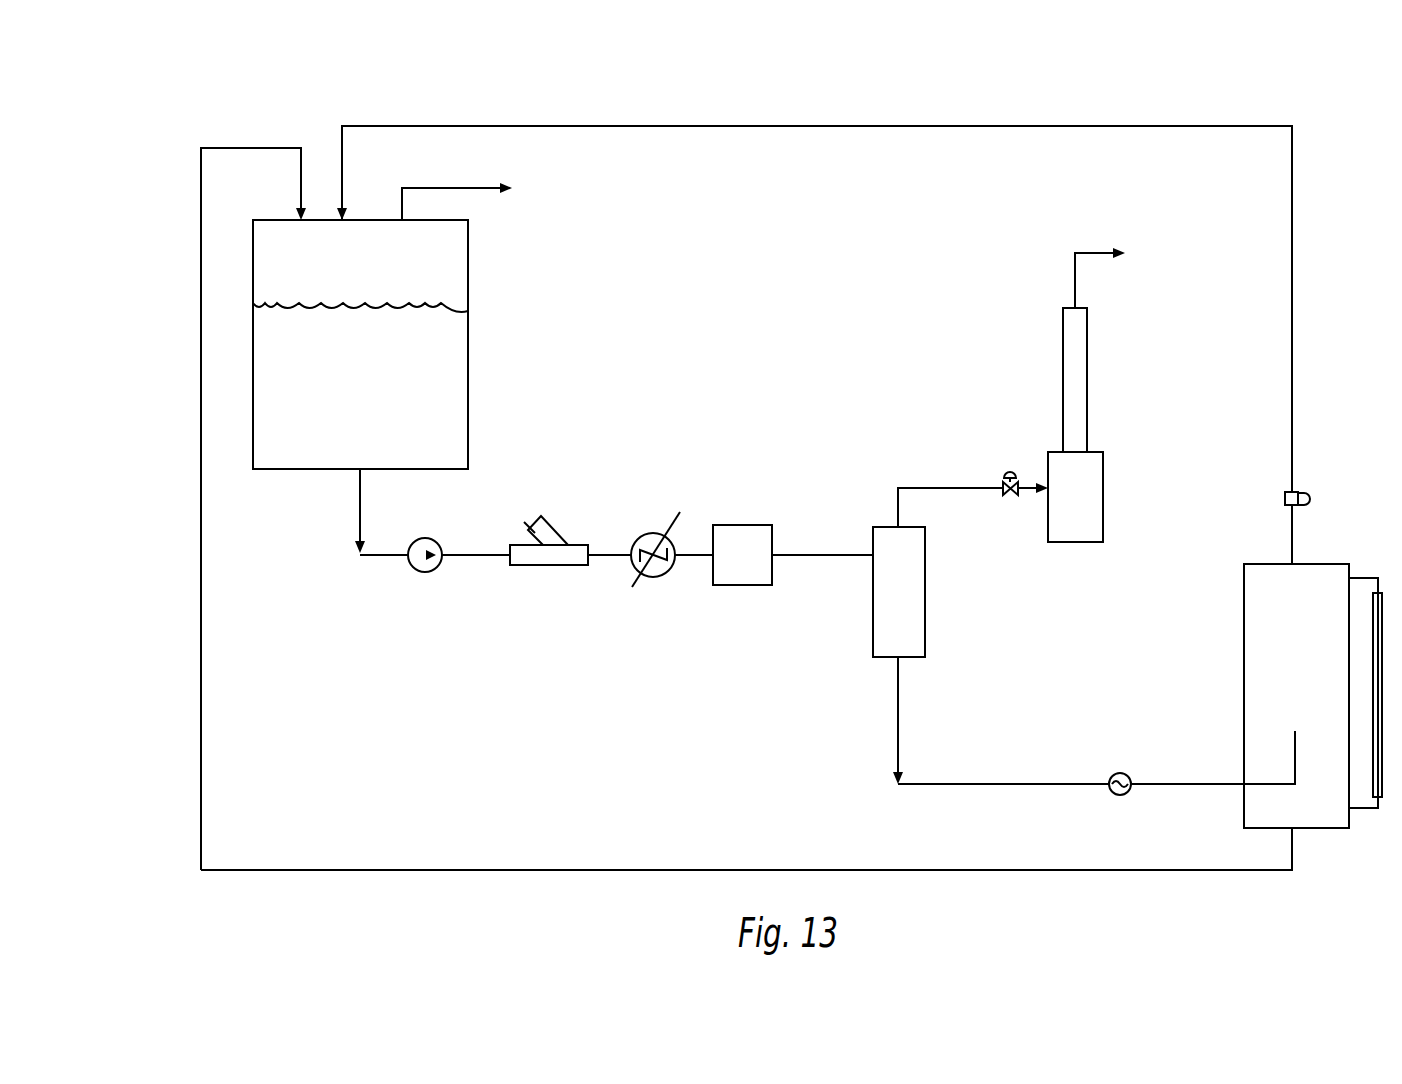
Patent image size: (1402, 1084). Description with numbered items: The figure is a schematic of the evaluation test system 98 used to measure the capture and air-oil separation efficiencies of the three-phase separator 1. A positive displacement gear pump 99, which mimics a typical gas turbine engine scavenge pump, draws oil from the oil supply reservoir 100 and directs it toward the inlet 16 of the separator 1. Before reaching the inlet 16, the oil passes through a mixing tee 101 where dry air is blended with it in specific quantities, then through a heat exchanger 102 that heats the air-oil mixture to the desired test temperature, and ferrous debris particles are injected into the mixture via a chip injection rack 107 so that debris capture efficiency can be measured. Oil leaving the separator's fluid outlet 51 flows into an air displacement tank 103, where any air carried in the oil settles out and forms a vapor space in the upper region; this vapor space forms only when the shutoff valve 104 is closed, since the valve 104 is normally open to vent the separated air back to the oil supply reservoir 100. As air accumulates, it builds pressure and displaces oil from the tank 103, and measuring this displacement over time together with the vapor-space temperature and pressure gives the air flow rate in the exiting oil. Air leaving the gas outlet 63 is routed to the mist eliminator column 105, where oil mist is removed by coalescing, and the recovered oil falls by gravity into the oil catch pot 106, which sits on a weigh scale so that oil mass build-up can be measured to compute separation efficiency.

The evaluation test system 98 is at (150, 208).
The oil supply reservoir 100 is at (468, 282).
The positive displacement gear pump 99 is at (425, 572).
The mixing tee 101 is at (548, 567).
The heat exchanger 102 is at (650, 578).
The chip injection rack 107 is at (733, 586).
The three-phase separator 1 is at (925, 619).
The inlet 16 is at (872, 553).
The gas outlet 63 is at (897, 527).
The fluid outlet 51 is at (897, 657).
The oil catch pot 106 is at (1103, 512).
The mist eliminator column 105 is at (1063, 376).
The shutoff valve 104 is at (1312, 498).
The air displacement tank 103 is at (1244, 707).